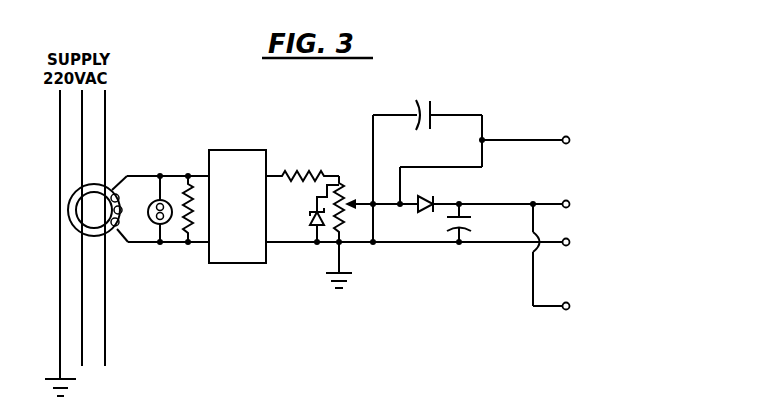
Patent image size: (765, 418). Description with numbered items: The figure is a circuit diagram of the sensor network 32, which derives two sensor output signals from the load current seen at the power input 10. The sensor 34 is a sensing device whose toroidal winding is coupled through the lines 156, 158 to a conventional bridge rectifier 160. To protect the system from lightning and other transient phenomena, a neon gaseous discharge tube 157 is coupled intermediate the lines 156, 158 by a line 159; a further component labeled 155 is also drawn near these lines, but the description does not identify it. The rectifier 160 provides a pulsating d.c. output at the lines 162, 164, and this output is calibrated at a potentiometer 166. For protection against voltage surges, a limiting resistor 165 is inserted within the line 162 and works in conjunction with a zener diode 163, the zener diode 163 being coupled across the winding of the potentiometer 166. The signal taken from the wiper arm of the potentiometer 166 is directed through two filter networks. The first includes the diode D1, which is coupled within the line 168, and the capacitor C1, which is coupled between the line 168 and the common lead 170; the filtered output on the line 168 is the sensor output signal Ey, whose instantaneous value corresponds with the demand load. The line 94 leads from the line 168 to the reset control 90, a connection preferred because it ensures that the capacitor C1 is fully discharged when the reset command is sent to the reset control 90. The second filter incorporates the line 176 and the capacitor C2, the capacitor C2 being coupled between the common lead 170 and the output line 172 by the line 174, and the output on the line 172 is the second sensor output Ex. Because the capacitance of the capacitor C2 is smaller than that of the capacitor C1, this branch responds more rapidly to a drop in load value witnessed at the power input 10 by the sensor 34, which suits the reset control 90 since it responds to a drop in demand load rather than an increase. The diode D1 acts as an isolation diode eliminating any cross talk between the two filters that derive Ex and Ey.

The power input 10 is at (121, 137).
The sensor network 32 is at (499, 97).
The sensor 34 is at (105, 183).
The supply line 155 is at (181, 176).
The line 156 is at (178, 176).
The neon tube 157 is at (172, 222).
The line 158 is at (156, 246).
The line 159 is at (160, 230).
The bridge rectifier 160 is at (244, 150).
The line 162 is at (284, 176).
The zener diode 163 is at (312, 212).
The line 164 is at (300, 243).
The limiting resistor 165 is at (323, 177).
The potentiometer 166 is at (358, 253).
The line 168 is at (503, 204).
The common lead 170 is at (488, 242).
The output line 172 is at (512, 140).
The line 174 is at (376, 113).
The line 176 is at (464, 159).
The line 94 is at (533, 284).
The reset control 90 is at (619, 315).
The capacitor C1 is at (471, 222).
The capacitor C2 is at (425, 103).
The diode D1 is at (433, 203).